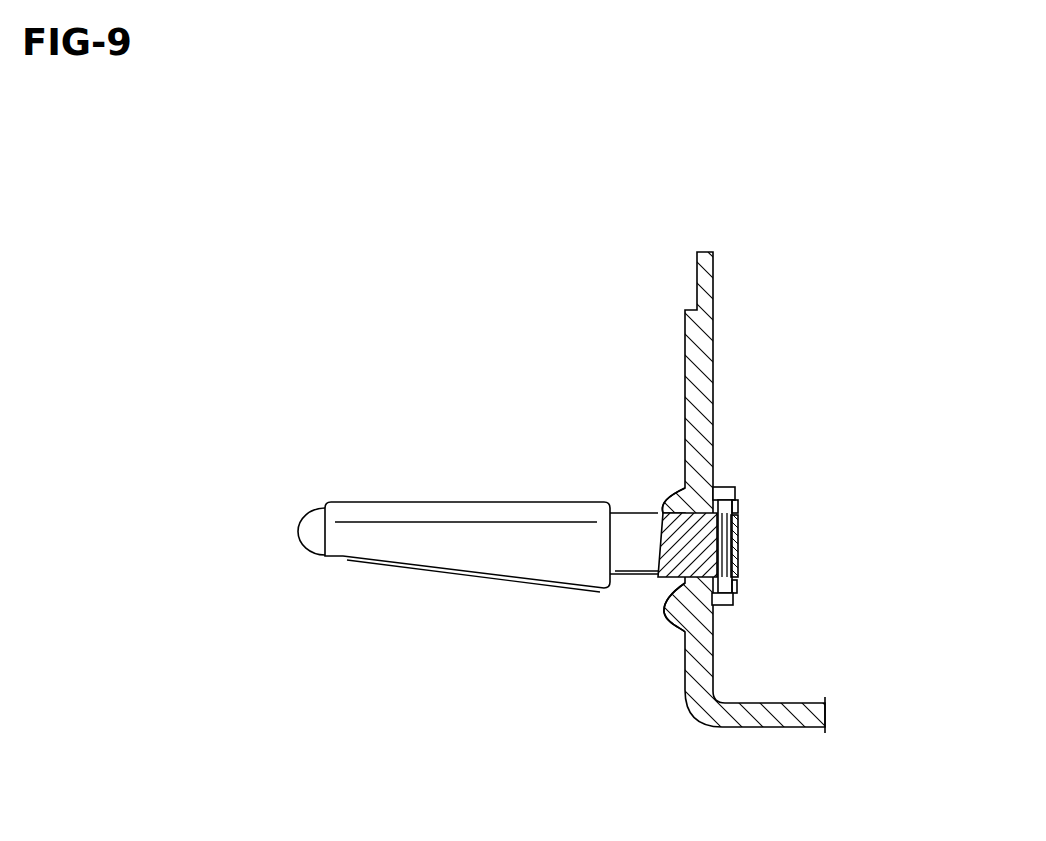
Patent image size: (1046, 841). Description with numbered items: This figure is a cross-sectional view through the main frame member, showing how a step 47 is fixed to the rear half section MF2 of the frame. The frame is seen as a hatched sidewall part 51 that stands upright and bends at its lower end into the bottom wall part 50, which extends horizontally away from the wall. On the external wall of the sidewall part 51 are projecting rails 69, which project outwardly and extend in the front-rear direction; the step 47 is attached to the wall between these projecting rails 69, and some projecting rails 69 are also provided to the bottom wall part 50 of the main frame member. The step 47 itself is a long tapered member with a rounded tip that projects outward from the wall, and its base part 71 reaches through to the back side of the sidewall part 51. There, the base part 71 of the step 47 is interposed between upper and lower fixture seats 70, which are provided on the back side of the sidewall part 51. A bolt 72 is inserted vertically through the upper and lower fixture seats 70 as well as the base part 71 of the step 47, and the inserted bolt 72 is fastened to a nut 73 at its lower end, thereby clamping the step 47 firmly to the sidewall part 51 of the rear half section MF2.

The step 47 is at (423, 501).
The bottom wall part 50 is at (800, 730).
The sidewall part 51 is at (685, 340).
The projecting rail 69 is at (672, 498).
The fixture seat 70 is at (737, 506).
The base part 71 is at (738, 545).
The bolt 72 is at (727, 487).
The nut 73 is at (729, 605).
The rear half section MF2 is at (713, 278).